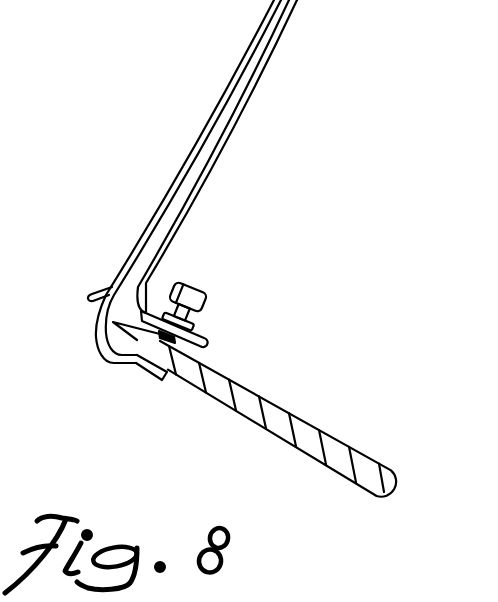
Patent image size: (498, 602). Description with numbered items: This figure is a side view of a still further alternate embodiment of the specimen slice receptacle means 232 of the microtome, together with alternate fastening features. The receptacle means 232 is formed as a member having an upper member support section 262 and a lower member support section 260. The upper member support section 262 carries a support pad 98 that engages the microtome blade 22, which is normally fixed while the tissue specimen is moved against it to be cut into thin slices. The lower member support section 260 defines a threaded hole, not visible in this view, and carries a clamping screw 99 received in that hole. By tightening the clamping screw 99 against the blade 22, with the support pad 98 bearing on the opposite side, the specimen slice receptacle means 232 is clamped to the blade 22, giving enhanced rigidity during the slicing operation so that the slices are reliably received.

The specimen slice receptacle means 232 is at (168, 135).
The upper member support section 262 is at (102, 358).
The lower member support section 260 is at (209, 338).
The clamping screw 99 is at (201, 291).
The support pad 98 is at (180, 375).
The blade 22 is at (306, 420).